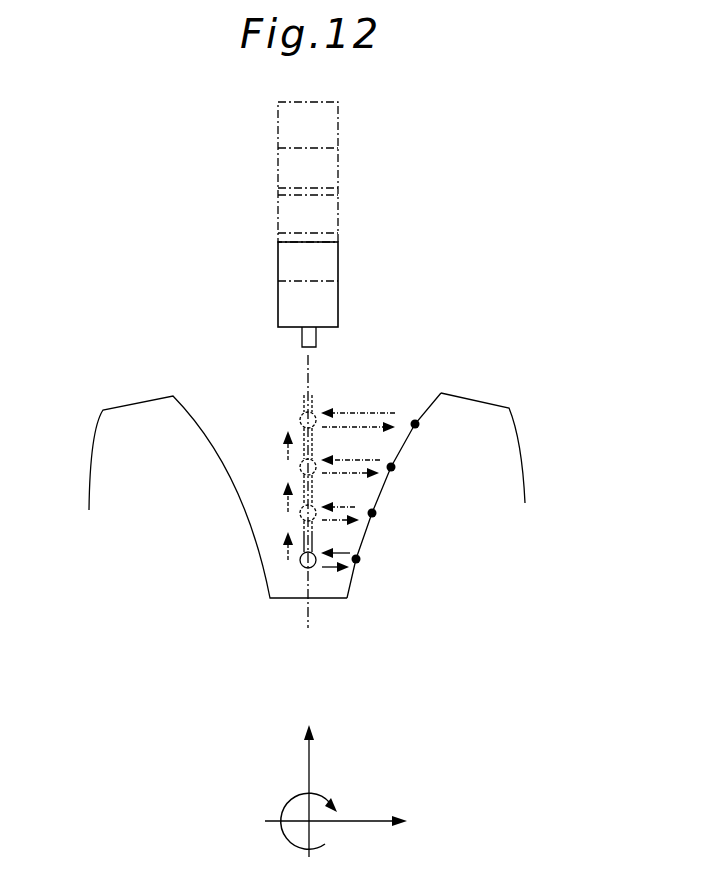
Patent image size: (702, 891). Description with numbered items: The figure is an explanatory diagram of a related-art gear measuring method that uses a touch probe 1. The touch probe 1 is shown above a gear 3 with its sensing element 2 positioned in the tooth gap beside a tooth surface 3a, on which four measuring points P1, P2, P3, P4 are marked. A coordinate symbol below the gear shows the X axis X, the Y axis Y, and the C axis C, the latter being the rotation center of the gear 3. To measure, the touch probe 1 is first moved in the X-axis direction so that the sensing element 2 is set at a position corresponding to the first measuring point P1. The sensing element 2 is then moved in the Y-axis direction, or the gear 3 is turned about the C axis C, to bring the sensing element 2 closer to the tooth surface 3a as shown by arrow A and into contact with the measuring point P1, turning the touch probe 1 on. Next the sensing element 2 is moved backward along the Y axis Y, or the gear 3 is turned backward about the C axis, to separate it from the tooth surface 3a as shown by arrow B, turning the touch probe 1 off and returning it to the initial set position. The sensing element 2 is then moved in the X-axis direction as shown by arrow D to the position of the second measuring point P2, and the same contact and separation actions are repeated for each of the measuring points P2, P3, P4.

The touch probe 1 is at (285, 314).
The sensing element 2 is at (300, 566).
The gear 3 is at (470, 397).
The tooth surface 3a is at (430, 407).
The arrow A is at (343, 571).
The arrow B is at (337, 552).
The arrow D is at (280, 548).
The first measuring point P1 is at (374, 568).
The second measuring point P2 is at (365, 517).
The measuring point P3 is at (375, 471).
The measuring point P4 is at (388, 425).
The X axis X is at (309, 778).
The Y axis Y is at (348, 823).
The C axis C is at (302, 815).